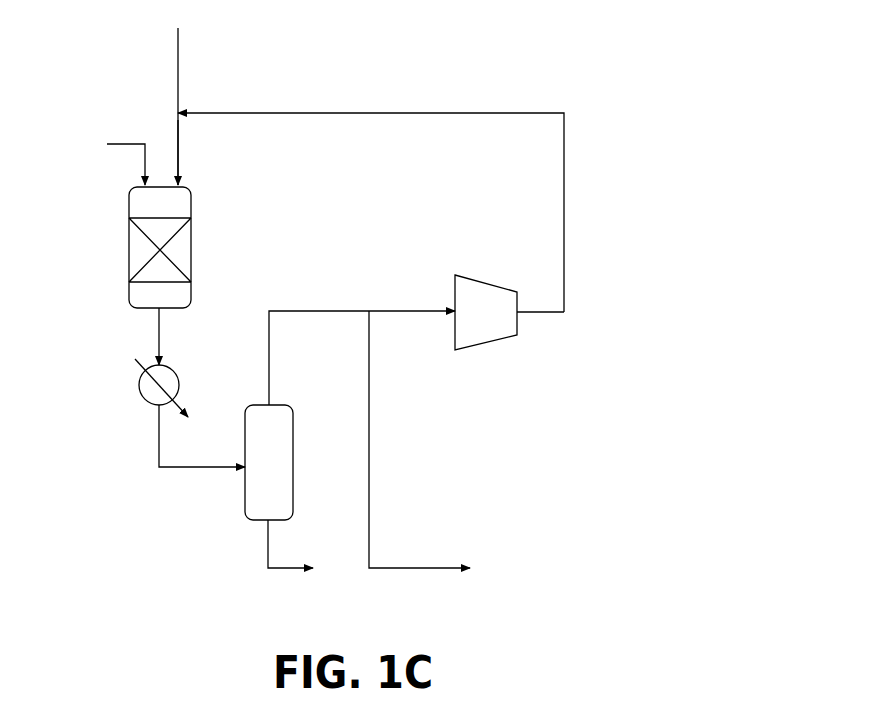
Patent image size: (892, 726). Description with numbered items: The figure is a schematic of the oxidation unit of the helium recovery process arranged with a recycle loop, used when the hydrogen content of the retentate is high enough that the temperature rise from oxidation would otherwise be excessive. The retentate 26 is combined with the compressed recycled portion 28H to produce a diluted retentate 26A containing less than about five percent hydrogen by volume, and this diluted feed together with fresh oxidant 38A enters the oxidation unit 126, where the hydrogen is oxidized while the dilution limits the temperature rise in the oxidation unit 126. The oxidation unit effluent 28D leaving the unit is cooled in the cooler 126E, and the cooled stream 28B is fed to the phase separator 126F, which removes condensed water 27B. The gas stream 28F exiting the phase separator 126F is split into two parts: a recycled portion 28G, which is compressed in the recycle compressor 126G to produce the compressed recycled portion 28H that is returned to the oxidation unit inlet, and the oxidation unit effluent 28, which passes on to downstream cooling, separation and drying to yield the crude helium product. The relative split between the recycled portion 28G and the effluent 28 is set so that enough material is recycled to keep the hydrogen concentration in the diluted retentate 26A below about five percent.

The retentate 26 is at (162, 106).
The diluted retentate 26A is at (198, 152).
The fresh oxidant 38A is at (126, 151).
The compressed recycled portion 28H is at (371, 197).
The oxidation unit 126 is at (160, 247).
The oxidation unit effluent 28D is at (180, 336).
The cooler 126E is at (147, 393).
The cooled first-stage product 28B is at (202, 436).
The phase separator 126F is at (269, 462).
The gas stream 28F is at (319, 358).
The recycled portion 28G is at (412, 326).
The recycle compressor 126G is at (509, 312).
The oxidation unit effluent 28 is at (419, 457).
The condensed water 27B is at (290, 561).